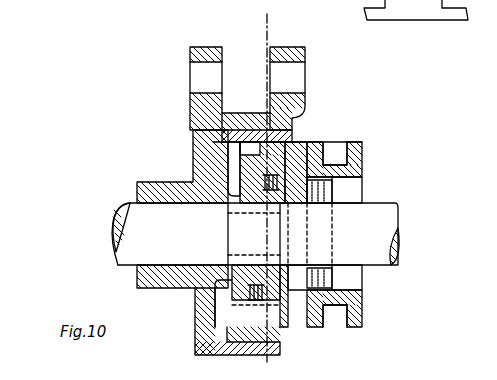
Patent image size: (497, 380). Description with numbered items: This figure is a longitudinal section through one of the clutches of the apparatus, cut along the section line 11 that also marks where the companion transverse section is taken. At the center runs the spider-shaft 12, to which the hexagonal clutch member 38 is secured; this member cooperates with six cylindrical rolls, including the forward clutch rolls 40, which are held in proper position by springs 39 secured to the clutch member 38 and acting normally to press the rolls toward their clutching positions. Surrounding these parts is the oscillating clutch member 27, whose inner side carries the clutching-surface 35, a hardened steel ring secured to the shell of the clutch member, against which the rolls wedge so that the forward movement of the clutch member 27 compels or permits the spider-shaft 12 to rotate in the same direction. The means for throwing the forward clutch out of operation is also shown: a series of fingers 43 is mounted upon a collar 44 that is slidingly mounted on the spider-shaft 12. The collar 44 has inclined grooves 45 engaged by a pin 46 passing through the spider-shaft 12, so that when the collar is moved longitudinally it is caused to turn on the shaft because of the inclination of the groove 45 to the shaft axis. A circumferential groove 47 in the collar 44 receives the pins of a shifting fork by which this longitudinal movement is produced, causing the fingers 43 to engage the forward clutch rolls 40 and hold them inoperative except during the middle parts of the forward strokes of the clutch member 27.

The section line 11 is at (282, 13).
The spider-shaft 12 is at (378, 237).
The clutch member 27 is at (190, 102).
The clutching-surface 35 is at (265, 69).
The clutch member 38 is at (215, 170).
The spring 39 is at (228, 307).
The forward clutch roll 40 is at (213, 143).
The finger 43 is at (297, 146).
The collar 44 is at (363, 143).
The groove 45 is at (353, 193).
The pin 46 is at (312, 278).
The circumferential groove 47 is at (333, 152).